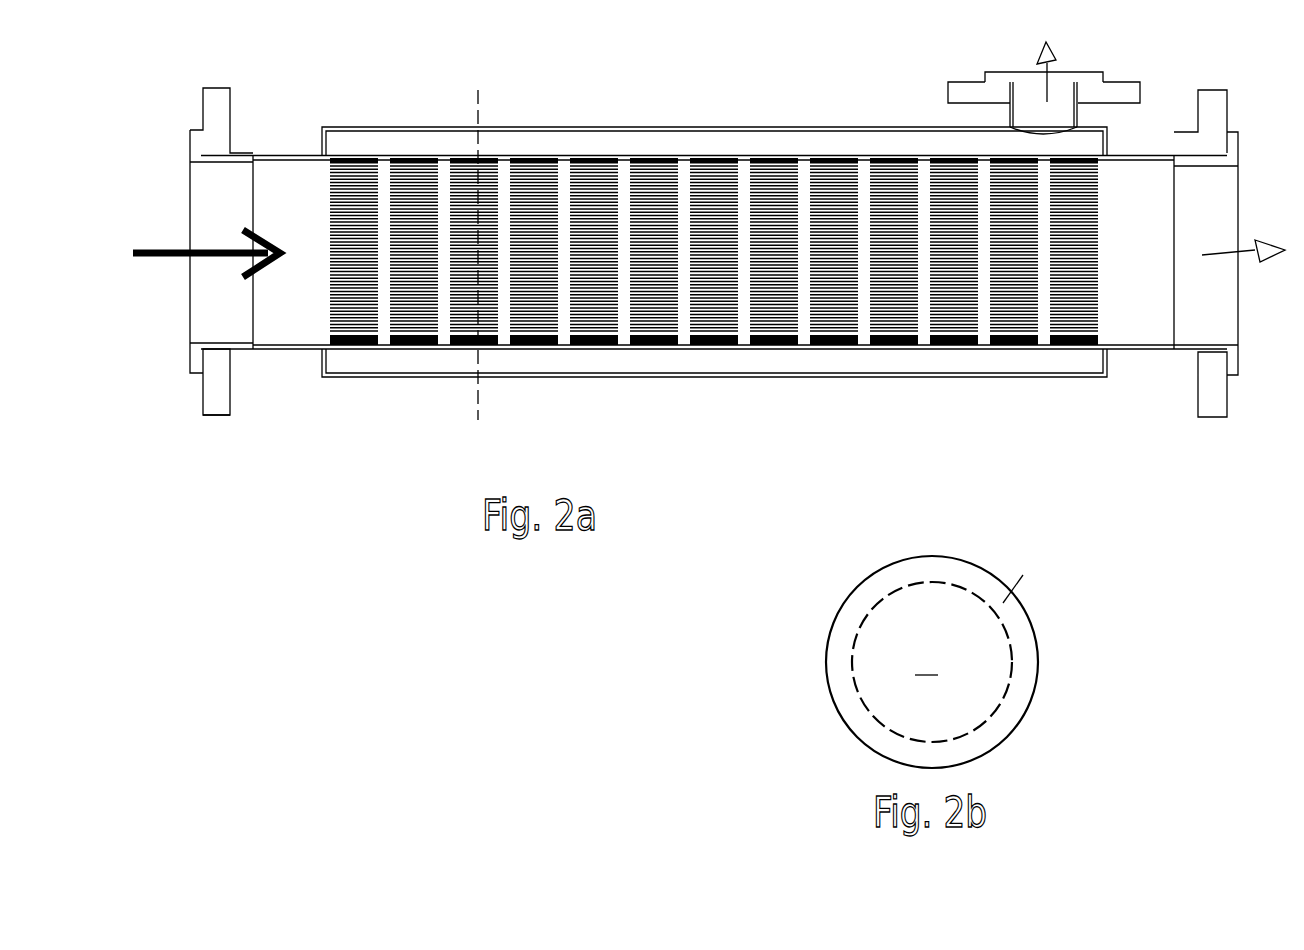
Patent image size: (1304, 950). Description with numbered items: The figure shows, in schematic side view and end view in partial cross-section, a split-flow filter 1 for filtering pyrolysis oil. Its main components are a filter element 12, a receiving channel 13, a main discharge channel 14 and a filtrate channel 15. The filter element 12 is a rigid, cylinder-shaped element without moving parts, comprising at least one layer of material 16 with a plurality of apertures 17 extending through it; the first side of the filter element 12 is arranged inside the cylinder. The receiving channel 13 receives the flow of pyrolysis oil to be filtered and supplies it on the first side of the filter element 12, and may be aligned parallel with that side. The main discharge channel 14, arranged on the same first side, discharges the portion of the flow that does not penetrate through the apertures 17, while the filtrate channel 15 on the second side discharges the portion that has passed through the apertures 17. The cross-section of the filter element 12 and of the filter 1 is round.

In FIG. 2A, the split-flow filter 1 is at (384, 470).
In FIG. 2B, the split-flow filter 1 is at (753, 688).
In FIG. 2A, the filter element 12 is at (622, 346).
In FIG. 2B, the filter element 12 is at (927, 583).
In FIG. 2A, the receiving channel 13 is at (235, 322).
In FIG. 2A, the main discharge channel 14 is at (1200, 318).
In FIG. 2A, the filtrate channel 15 is at (1035, 112).
In FIG. 2A, the layer of material 16 is at (682, 350).
In FIG. 2A, the apertures 17 is at (708, 158).